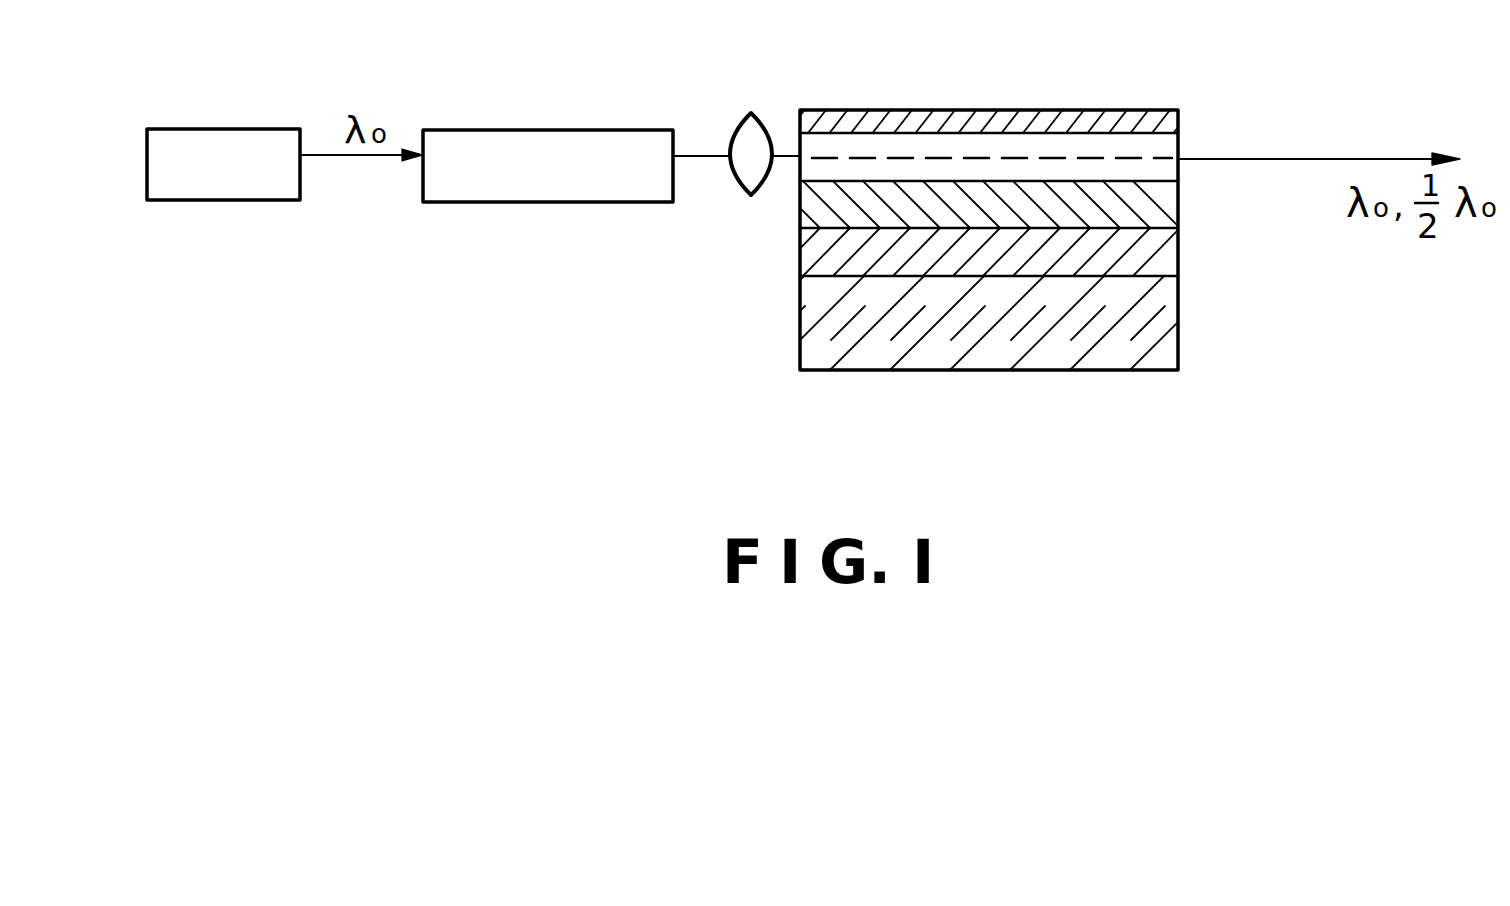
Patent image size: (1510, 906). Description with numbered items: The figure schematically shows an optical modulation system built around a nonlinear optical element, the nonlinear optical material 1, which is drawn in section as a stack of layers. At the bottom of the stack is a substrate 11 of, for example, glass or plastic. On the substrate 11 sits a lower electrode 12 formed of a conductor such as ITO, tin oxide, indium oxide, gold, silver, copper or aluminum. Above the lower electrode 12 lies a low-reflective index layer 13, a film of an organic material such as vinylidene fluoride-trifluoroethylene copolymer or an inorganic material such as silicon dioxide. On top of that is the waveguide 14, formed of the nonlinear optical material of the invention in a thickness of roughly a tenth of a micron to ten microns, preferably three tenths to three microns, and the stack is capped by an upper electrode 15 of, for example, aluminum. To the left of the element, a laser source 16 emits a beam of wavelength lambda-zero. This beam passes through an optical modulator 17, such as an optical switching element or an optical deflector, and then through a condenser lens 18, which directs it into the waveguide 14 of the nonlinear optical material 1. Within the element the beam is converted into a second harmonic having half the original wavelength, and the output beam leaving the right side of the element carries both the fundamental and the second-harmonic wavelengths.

The nonlinear optical material 1 is at (991, 197).
The substrate 11 is at (800, 327).
The lower electrode 12 is at (798, 258).
The low-reflective index layer 13 is at (1178, 204).
The waveguide 14 is at (1180, 146).
The upper electrode 15 is at (1149, 110).
The laser source 16 is at (267, 129).
The optical modulator 17 is at (645, 130).
The condenser lens 18 is at (762, 114).